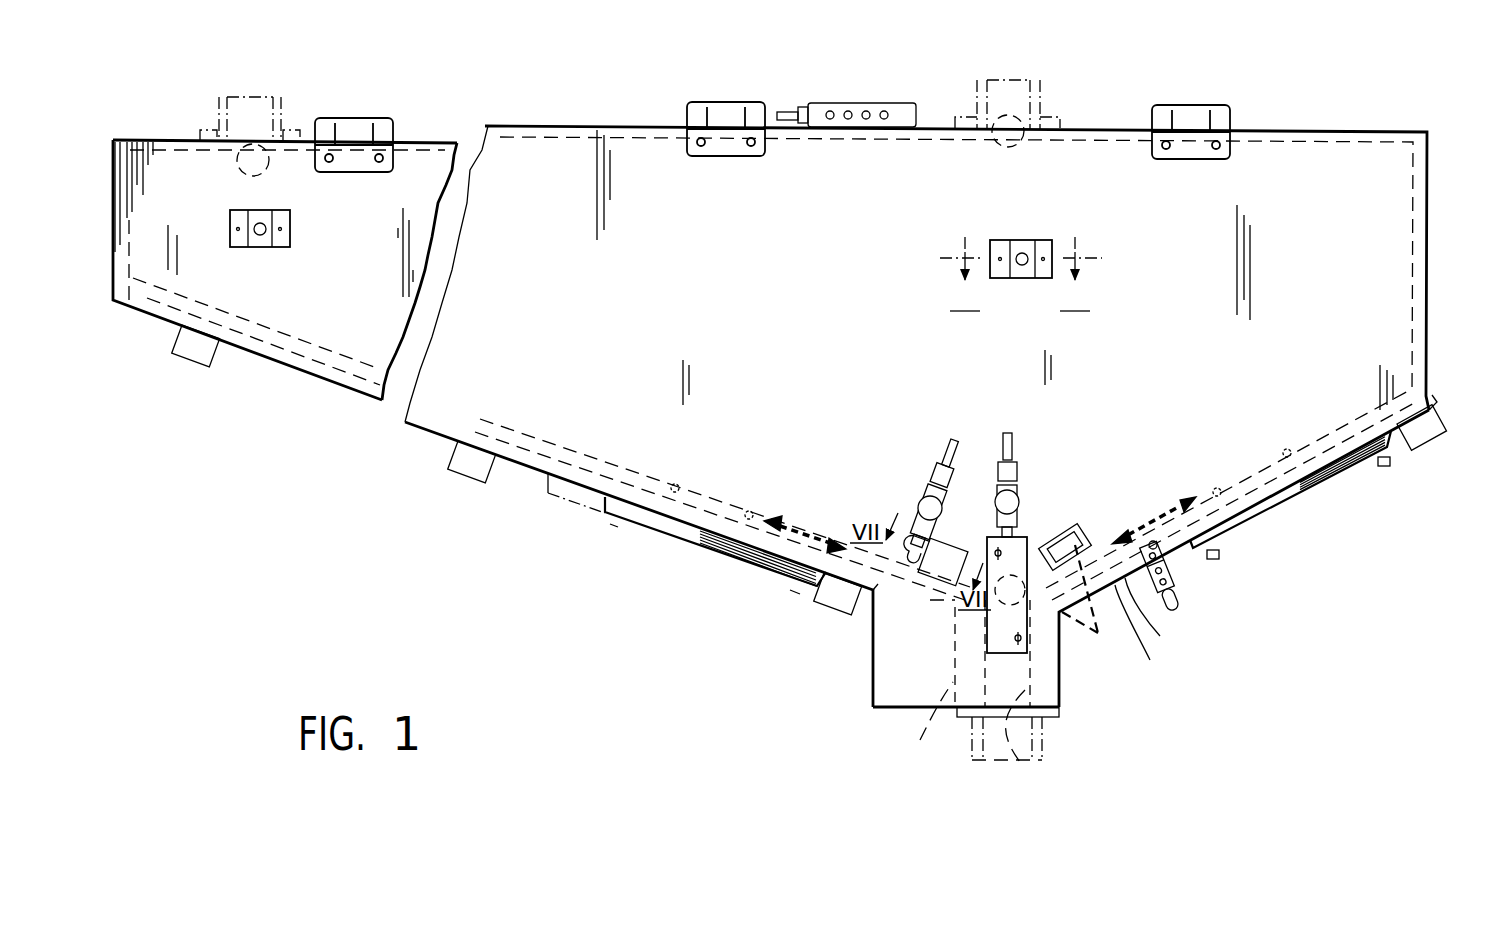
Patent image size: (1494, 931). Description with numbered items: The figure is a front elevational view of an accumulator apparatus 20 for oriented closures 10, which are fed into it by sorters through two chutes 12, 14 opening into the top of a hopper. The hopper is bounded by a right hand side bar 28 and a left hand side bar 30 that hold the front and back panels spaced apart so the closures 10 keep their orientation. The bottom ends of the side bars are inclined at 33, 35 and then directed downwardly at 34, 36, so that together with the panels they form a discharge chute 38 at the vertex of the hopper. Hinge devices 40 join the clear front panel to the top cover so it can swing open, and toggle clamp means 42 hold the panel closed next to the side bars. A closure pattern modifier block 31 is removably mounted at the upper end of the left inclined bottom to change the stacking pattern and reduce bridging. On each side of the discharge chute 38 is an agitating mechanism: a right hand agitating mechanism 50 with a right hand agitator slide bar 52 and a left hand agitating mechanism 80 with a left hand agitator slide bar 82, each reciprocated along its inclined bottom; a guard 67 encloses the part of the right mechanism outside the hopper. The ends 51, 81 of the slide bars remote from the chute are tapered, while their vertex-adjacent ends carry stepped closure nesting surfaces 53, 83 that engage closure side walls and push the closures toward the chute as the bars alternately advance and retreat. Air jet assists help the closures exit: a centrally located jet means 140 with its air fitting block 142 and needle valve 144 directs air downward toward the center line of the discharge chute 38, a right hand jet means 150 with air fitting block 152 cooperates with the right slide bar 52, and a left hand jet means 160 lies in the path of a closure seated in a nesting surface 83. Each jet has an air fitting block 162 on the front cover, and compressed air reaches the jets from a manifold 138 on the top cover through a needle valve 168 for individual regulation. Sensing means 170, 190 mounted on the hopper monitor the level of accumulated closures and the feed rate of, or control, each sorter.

The closures 10 is at (265, 172).
The chute 12 is at (1042, 93).
The chute 14 is at (215, 100).
The accumulator apparatus 20 is at (158, 362).
The right hand side bar 28 is at (1410, 285).
The left hand side bar 30 is at (515, 438).
The closure pattern modifier block 31 is at (285, 320).
The inclined bottom end of right hand side bar 33 is at (1160, 614).
The downwardly directed end of right hand side bar 34 is at (1060, 690).
The inclined bottom end of left hand side bar 35 is at (930, 624).
The downwardly directed end of left hand side bar 36 is at (922, 721).
The discharge chute 38 is at (1025, 762).
The hinge devices 40 is at (350, 118).
The toggle clamp means 42 is at (1185, 590).
The right hand agitating mechanism 50 is at (1322, 540).
The end of right hand slide bar remote from discharge chute 51 is at (1310, 430).
The right hand agitator slide bar 52 is at (1180, 485).
The closure nesting surfaces 53 is at (1092, 607).
The guard 67 is at (1440, 403).
The left hand agitating mechanism 80 is at (655, 572).
The end of left hand slide bar remote from discharge chute 81 is at (628, 450).
The left hand agitator slide bar 82 is at (788, 498).
The closure nesting surfaces 83 is at (870, 612).
The manifold 138 is at (855, 103).
The centrally located jet means 140 is at (1000, 442).
The air fitting block 142 is at (985, 630).
The needle valve 144 is at (1019, 498).
The right hand jet means 150 is at (1100, 522).
The air fitting block 152 is at (1152, 635).
The left hand jet means 160 is at (935, 445).
The air fitting block 162 is at (948, 545).
The needle valve 168 is at (916, 535).
The sensing means 170 is at (1015, 236).
The sensing means 190 is at (252, 205).